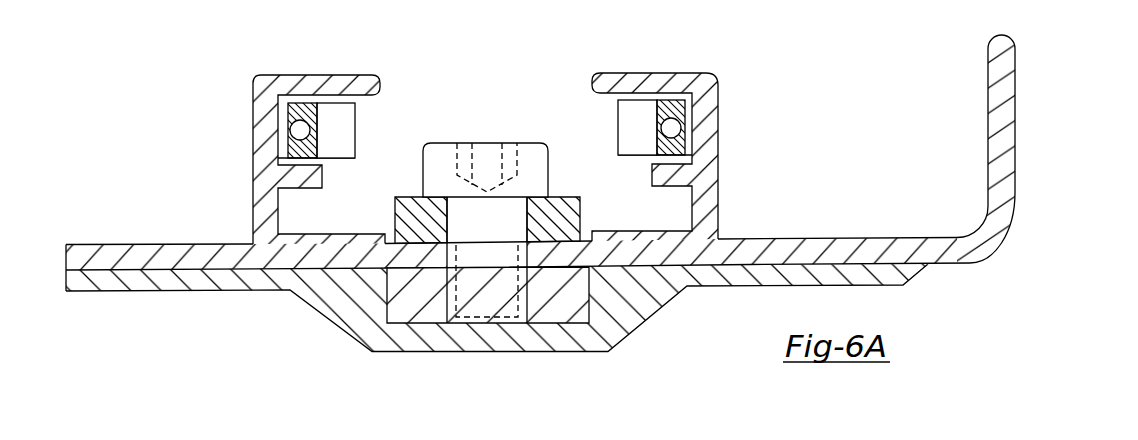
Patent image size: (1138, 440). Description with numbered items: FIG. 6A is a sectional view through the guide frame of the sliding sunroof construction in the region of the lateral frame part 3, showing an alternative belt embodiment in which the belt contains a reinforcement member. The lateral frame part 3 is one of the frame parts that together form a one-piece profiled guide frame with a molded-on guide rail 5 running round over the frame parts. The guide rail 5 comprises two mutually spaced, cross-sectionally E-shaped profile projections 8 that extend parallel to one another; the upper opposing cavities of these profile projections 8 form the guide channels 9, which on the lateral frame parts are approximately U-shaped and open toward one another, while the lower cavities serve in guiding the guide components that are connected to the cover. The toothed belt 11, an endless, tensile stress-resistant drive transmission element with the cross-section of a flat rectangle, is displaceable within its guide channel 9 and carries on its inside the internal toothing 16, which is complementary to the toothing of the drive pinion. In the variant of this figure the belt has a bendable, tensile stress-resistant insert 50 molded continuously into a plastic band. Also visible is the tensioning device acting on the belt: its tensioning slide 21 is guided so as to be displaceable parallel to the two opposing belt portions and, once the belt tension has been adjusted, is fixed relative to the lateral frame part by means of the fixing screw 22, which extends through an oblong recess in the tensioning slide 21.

The lateral frame part 3 is at (1015, 123).
The guide rail 5 is at (478, 129).
The profile projection 8 is at (273, 163).
The guide channel 9 is at (360, 97).
The toothed belt 11 is at (345, 160).
The internal toothing 16 is at (340, 143).
The tensioning slide 21 is at (567, 217).
The fixing screw 22 is at (530, 153).
The insert 50 is at (300, 130).